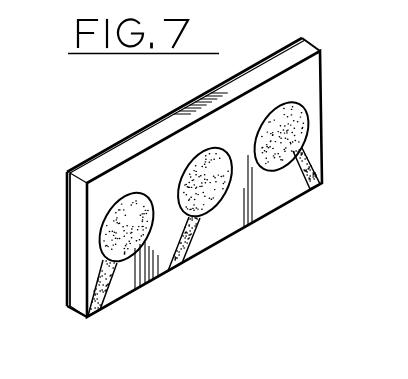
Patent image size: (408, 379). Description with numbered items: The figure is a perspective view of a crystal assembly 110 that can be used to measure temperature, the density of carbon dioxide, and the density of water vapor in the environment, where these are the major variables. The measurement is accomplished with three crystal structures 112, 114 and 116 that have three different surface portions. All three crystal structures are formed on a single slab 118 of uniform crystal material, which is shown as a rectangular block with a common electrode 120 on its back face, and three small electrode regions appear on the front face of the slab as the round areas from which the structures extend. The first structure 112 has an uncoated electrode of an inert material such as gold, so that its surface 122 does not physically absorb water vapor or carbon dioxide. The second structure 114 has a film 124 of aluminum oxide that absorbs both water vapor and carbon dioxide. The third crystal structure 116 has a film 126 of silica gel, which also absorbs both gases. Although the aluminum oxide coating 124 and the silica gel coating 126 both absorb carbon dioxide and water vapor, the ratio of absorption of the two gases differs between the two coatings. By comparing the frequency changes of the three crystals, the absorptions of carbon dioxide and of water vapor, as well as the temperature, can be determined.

The crystal assembly 110 is at (326, 79).
The first crystal structure 112 is at (127, 276).
The second crystal structure 114 is at (214, 224).
The third crystal structure 116 is at (286, 184).
The slab 118 is at (79, 250).
The common electrode 120 is at (68, 215).
The surface 122 is at (120, 236).
The film of aluminum oxide 124 is at (192, 177).
The film of silica gel 126 is at (287, 132).